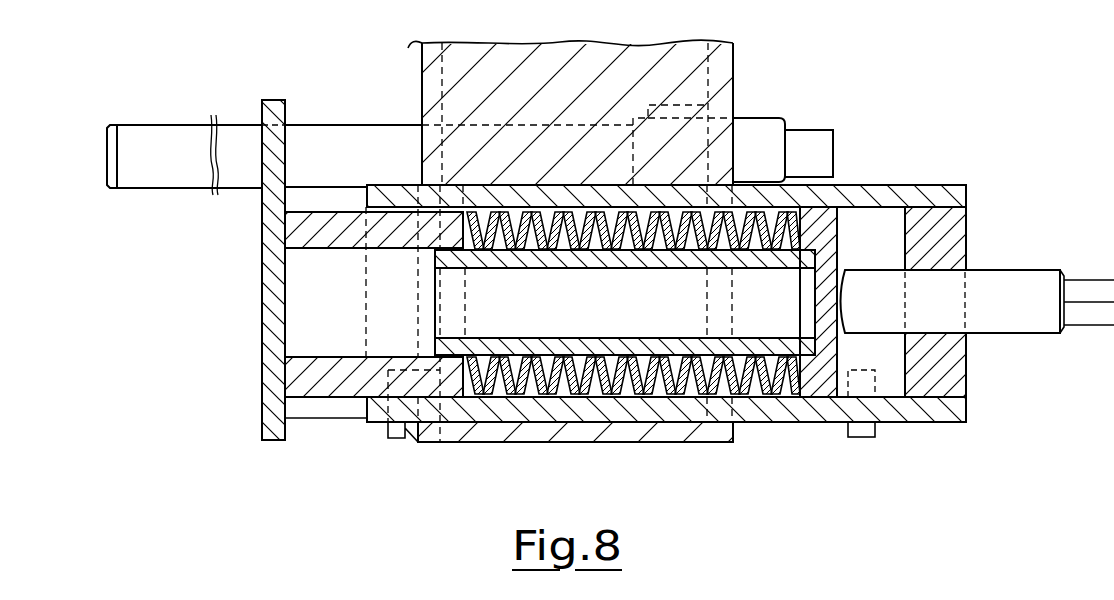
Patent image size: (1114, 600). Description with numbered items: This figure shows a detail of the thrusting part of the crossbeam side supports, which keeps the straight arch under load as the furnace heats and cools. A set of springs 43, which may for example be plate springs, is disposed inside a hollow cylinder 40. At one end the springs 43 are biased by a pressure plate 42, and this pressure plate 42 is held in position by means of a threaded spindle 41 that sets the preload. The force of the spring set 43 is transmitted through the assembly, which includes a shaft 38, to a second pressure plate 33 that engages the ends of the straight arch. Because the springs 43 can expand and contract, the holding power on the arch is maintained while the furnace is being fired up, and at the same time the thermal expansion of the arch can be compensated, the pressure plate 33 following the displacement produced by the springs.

The shaft 38 is at (170, 142).
The pressure plate 33 is at (272, 392).
The hollow cylinder 40 is at (505, 410).
The springs 43 is at (578, 392).
The pressure plate 42 is at (827, 375).
The threaded spindle 41 is at (1018, 303).